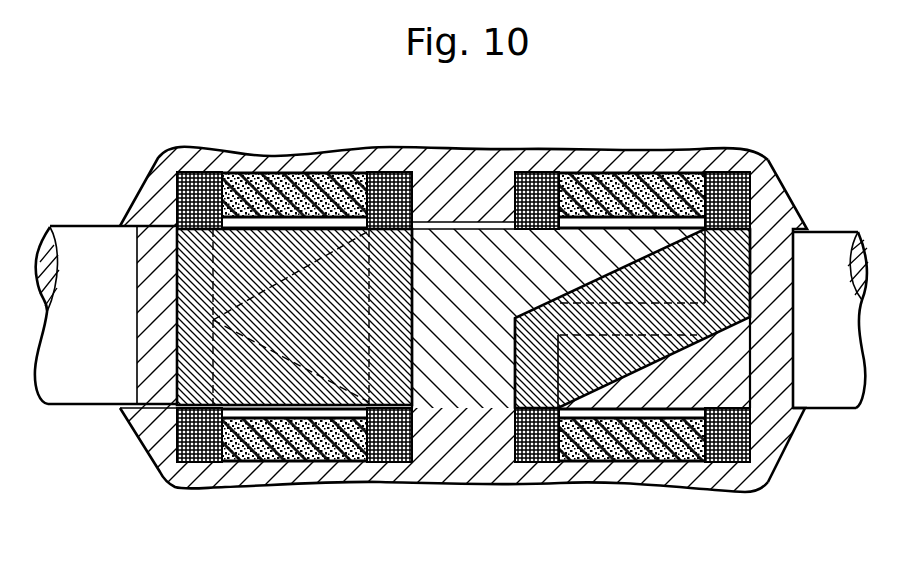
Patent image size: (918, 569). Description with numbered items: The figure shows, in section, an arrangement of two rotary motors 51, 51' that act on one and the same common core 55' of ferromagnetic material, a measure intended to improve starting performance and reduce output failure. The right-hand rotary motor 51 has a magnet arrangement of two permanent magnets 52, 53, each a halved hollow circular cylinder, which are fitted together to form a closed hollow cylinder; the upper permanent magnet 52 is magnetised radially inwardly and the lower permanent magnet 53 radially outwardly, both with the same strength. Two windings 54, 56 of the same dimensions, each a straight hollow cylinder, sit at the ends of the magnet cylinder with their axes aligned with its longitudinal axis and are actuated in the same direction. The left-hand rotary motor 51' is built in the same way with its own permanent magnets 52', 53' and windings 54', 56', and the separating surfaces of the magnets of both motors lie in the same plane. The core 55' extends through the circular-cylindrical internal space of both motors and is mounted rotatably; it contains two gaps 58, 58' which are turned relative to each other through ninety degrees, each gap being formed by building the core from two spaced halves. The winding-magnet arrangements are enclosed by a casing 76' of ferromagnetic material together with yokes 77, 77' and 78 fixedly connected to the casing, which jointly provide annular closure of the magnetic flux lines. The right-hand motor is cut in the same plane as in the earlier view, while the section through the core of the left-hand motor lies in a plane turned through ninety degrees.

The yoke 77 is at (452, 312).
The yoke 78 is at (773, 193).
The casing 76' is at (558, 252).
The yoke 77' is at (615, 252).
The gap 58' is at (223, 315).
The gap 58 is at (677, 318).
The core 55' is at (830, 291).
The rotary motor 51' is at (288, 295).
The rotary motor 51 is at (634, 298).
The winding 54' is at (193, 278).
The winding 56' is at (388, 279).
The permanent magnet 52' is at (295, 163).
The permanent magnet 53' is at (295, 469).
The winding 54 is at (543, 279).
The winding 56 is at (729, 279).
The permanent magnet 52 is at (632, 162).
The permanent magnet 53 is at (632, 471).